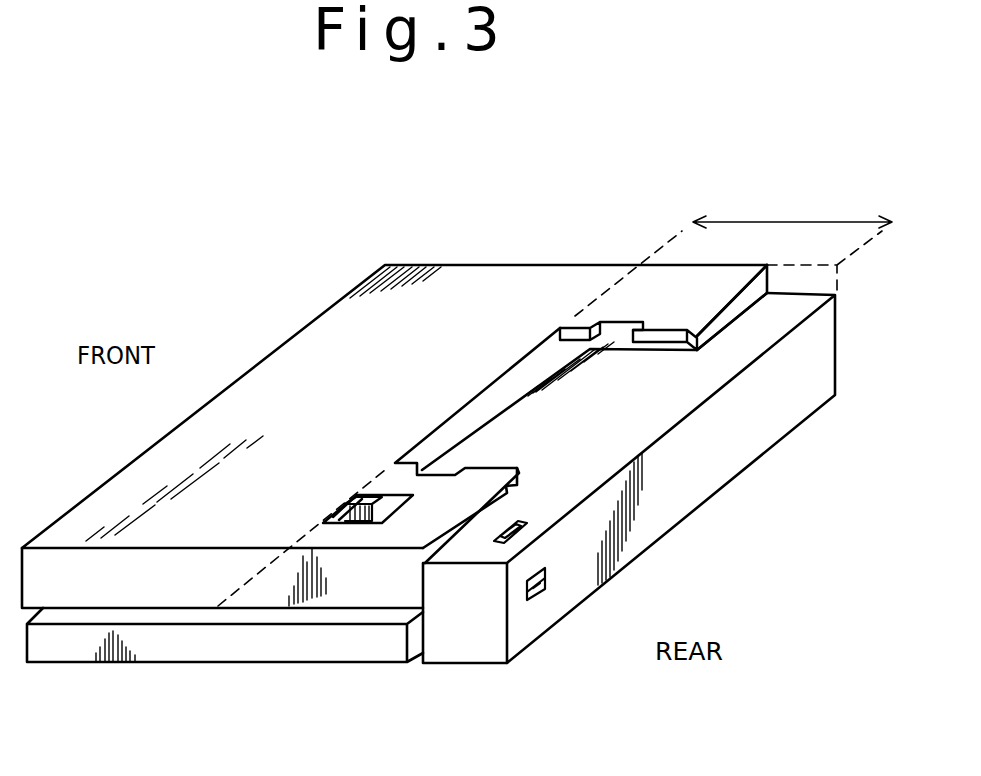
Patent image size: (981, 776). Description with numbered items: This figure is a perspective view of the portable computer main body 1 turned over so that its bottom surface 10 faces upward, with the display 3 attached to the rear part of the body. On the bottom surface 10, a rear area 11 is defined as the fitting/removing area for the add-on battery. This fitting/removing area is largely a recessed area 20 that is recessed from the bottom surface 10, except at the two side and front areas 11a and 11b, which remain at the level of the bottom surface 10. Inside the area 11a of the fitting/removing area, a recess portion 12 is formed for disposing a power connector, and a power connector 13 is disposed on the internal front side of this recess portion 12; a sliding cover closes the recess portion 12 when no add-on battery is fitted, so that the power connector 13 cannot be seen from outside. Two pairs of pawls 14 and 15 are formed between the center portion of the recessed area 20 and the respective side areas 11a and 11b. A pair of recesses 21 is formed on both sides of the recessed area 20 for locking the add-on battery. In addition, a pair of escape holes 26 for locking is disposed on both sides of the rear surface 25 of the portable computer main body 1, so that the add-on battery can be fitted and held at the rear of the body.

The portable computer main body 1 is at (47, 585).
The display 3 is at (252, 643).
The bottom surface 10 is at (457, 344).
The rear area 11 is at (792, 210).
The side area 11a is at (408, 530).
The side area 11b is at (668, 295).
The recess portion 12 is at (387, 495).
The power connector 13 is at (355, 497).
The pawl 14 is at (663, 339).
The pawl 15 is at (573, 329).
The recessed area 20 is at (566, 436).
The recess 21 is at (496, 536).
The rear surface 25 is at (676, 478).
The escape hole 26 is at (538, 594).